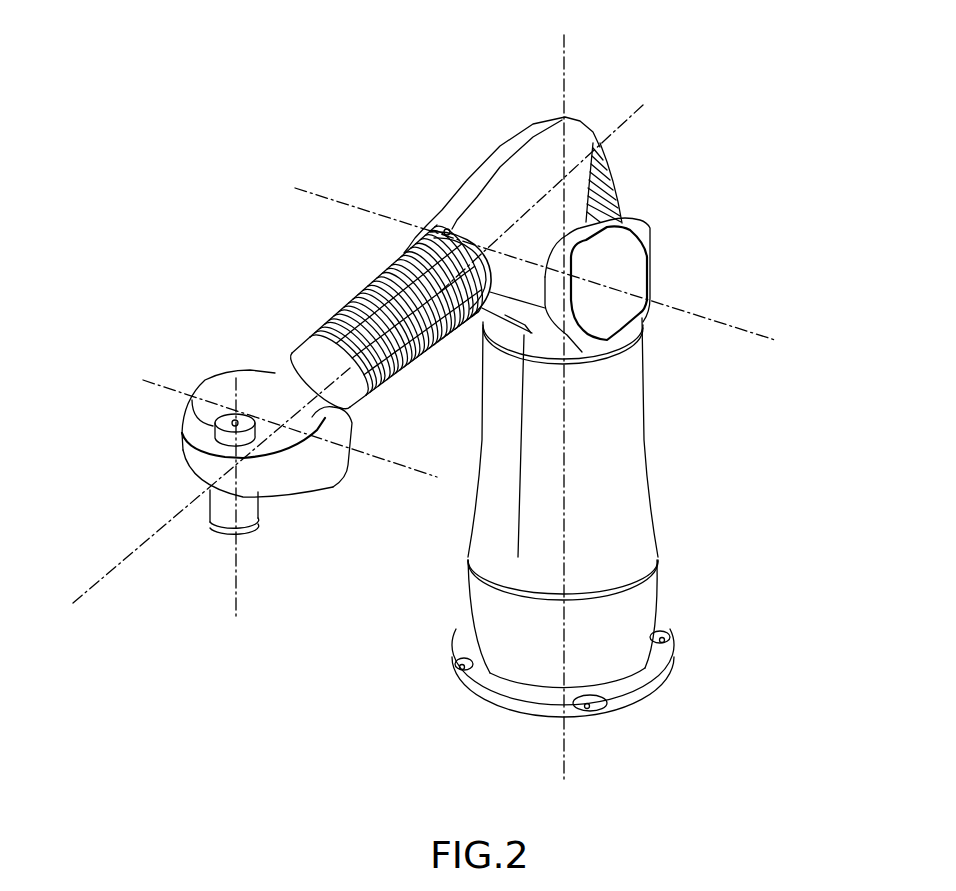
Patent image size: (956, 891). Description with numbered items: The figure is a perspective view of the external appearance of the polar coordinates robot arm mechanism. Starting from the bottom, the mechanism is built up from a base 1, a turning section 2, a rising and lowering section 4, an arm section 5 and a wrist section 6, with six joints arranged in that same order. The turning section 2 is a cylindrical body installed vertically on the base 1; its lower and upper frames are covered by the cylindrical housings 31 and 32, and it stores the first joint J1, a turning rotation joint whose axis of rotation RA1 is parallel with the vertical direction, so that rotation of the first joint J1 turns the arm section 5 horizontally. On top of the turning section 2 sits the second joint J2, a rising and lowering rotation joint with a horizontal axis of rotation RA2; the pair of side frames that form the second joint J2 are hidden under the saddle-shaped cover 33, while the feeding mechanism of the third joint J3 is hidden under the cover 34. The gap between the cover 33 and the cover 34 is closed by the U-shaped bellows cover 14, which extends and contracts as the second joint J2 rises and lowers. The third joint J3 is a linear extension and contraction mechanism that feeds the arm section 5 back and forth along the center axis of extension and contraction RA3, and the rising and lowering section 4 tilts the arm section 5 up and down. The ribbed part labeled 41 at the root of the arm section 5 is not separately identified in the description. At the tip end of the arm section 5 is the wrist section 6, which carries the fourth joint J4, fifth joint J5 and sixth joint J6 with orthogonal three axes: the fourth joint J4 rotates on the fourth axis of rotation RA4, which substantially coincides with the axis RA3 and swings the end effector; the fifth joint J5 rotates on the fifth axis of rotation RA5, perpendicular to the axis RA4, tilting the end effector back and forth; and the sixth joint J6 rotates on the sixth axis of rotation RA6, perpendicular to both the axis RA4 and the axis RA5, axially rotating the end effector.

The base 1 is at (673, 665).
The turning section 2 is at (467, 320).
The rising and lowering section 4 is at (494, 157).
The arm section 5 is at (335, 265).
The wrist section 6 is at (212, 352).
The U-shaped bellows cover 14 is at (620, 177).
The cylindrical housing 31 is at (657, 601).
The cylindrical housing 32 is at (643, 408).
The cover 33 is at (652, 268).
The cover 34 is at (472, 190).
The joint housing 41 is at (430, 230).
The first joint J1 is at (663, 553).
The second joint J2 is at (538, 331).
The third joint J3 is at (402, 251).
The fourth joint J4 is at (297, 340).
The fifth joint J5 is at (336, 486).
The sixth joint J6 is at (209, 532).
The axis of rotation RA1 is at (568, 393).
The axis of rotation RA2 is at (562, 282).
The center axis of extension and contraction RA3 is at (554, 179).
The fourth axis of rotation RA4 is at (195, 503).
The fifth axis of rotation RA5 is at (268, 414).
The sixth axis of rotation RA6 is at (236, 513).